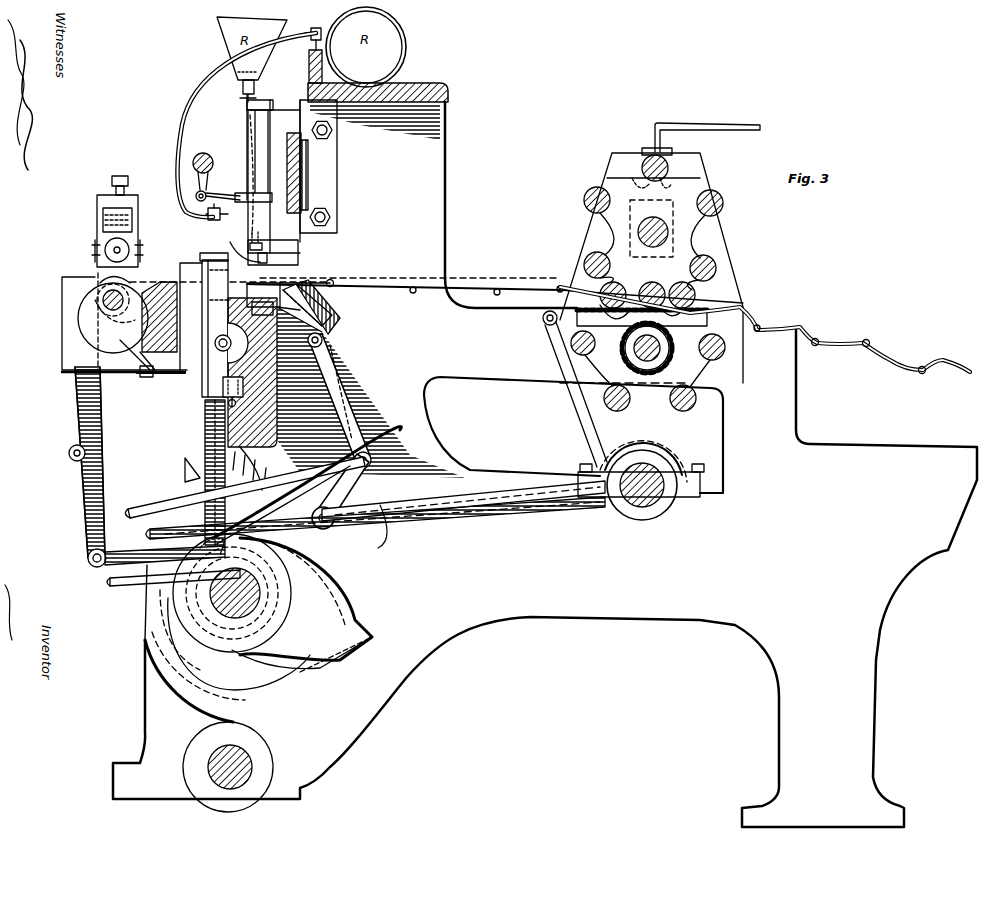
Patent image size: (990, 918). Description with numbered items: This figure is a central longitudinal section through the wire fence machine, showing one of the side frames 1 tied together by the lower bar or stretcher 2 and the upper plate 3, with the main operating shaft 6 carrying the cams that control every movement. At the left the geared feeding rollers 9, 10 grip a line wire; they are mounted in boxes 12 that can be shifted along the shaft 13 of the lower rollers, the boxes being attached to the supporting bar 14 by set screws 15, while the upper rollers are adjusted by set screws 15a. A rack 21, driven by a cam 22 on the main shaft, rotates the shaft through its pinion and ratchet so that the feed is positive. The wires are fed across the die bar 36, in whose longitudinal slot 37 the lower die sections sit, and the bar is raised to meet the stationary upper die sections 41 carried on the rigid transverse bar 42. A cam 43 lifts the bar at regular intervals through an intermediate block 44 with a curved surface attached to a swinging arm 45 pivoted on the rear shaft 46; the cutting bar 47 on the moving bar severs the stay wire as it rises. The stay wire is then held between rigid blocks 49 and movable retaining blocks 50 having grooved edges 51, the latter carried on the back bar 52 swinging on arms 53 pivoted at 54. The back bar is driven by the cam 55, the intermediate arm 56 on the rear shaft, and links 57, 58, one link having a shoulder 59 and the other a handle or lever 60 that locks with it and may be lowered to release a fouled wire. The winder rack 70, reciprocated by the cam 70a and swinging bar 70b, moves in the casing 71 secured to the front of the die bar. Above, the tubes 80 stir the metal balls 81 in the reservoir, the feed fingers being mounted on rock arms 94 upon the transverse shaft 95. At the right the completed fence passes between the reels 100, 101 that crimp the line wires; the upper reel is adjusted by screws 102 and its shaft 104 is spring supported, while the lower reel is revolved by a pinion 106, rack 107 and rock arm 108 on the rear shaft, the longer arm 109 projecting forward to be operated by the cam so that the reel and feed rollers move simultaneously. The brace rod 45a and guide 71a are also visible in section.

The side frames 1 is at (545, 464).
The lower bar or stretcher 2 is at (255, 767).
The upper plate 3 is at (374, 146).
The main operating shaft 6 is at (235, 593).
The geared feeding roller 9 is at (98, 317).
The geared feeding roller 10 is at (142, 258).
The boxes 12 is at (96, 217).
The shaft 13 is at (100, 303).
The supporting bar 14 is at (230, 314).
The set screws 15 is at (148, 378).
The set screws 15a is at (110, 185).
The rack 21 is at (78, 410).
The cam 22 is at (195, 690).
The die bar 36 is at (262, 392).
The longitudinal slot 37 is at (288, 336).
The upper die sections 41 is at (298, 256).
The rigid transverse bar 42 is at (326, 168).
The cam 43 is at (352, 577).
The intermediate block 44 is at (272, 455).
The swinging arm 45 is at (263, 486).
The connecting rod 45a is at (475, 505).
The rear shaft 46 is at (652, 508).
The cutting bar 47 is at (245, 250).
The rigid blocks 49 is at (248, 297).
The retaining blocks 50 is at (405, 278).
The grooved edges 51 is at (307, 277).
The back bar 52 is at (332, 334).
The arms 53 is at (320, 312).
The pivot 54 is at (222, 348).
The cam 55 is at (241, 593).
The intermediate arm 56 is at (380, 528).
The link 57 is at (340, 491).
The link 58 is at (347, 390).
The shoulder 59 is at (402, 452).
The handle or lever 60 is at (357, 430).
The rack 70 is at (203, 446).
The cam 70a is at (370, 638).
The swinging bar 70b is at (135, 583).
The casing 71 is at (217, 368).
The screw 71a is at (218, 390).
The tubes 80 is at (244, 138).
The balls 81 is at (257, 68).
The rock arms 94 is at (209, 192).
The transverse shaft 95 is at (192, 162).
The upper reel 100 is at (690, 232).
The lower reel 101 is at (690, 365).
The screws 102 is at (674, 152).
The shaft 104 is at (690, 246).
The pinion 106 is at (673, 343).
The rack 107 is at (548, 326).
The rock arm 108 is at (616, 402).
The longer arm 109 is at (395, 545).